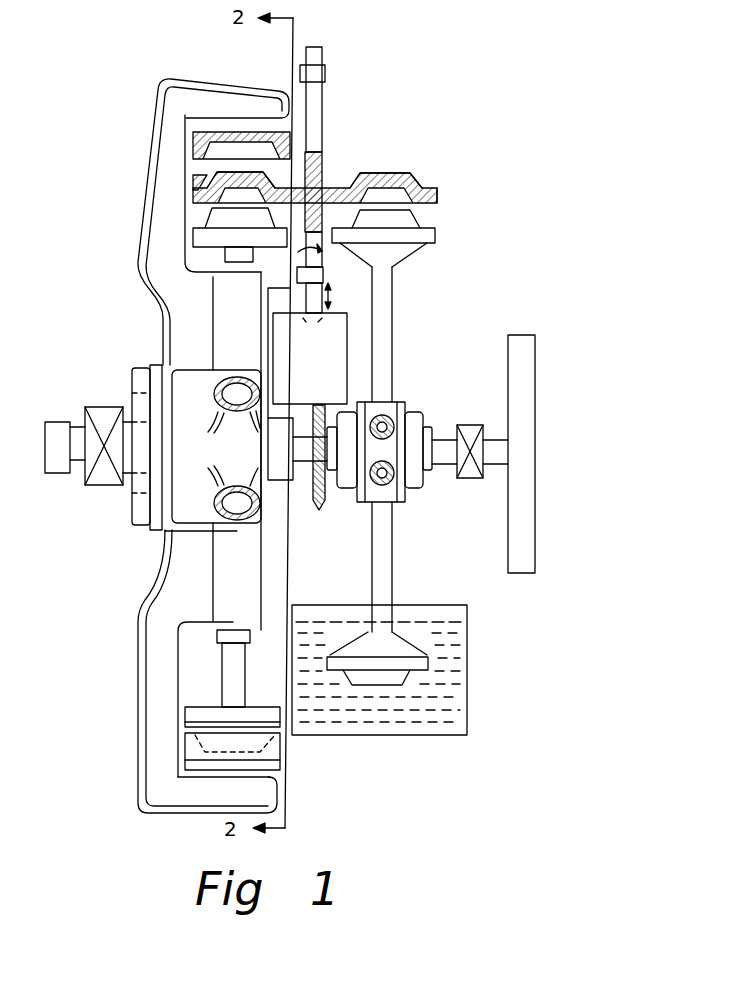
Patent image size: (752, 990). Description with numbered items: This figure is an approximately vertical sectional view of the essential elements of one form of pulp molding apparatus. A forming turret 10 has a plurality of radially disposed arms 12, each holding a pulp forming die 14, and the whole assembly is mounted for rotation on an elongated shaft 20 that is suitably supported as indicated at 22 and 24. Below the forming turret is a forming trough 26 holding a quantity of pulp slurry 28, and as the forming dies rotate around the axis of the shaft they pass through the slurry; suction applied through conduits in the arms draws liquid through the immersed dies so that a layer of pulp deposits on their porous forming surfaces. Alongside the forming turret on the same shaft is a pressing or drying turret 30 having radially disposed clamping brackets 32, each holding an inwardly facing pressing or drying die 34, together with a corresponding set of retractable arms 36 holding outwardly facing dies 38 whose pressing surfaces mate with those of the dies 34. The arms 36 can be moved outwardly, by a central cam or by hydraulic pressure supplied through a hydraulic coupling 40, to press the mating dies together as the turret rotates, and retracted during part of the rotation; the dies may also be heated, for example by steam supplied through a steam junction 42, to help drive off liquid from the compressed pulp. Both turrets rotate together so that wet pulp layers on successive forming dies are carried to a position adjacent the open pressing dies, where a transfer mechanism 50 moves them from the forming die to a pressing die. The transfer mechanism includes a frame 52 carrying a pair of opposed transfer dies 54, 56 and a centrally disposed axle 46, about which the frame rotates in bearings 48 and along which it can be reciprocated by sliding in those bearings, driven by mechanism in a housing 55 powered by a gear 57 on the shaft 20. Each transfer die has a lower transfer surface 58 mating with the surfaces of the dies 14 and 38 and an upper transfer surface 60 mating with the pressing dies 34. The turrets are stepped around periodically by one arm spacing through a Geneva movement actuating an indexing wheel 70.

The forming turret 10 is at (402, 506).
The radially disposed arm 12 is at (393, 578).
The pulp forming die 14 is at (413, 220).
The shaft 20 is at (440, 438).
The shaft support 22 is at (470, 425).
The shaft support 24 is at (100, 486).
The forming trough 26 is at (468, 708).
The pulp slurry 28 is at (440, 725).
The pressing or drying turret 30 is at (154, 543).
The clamping bracket 32 is at (157, 228).
The pressing or drying die 34 is at (284, 158).
The retractable arm 36 is at (246, 677).
The outwardly facing die 38 is at (289, 227).
The hydraulic coupling 40 is at (50, 475).
The steam junction 42 is at (283, 418).
The axle 46 is at (323, 117).
The bearing 48 is at (325, 70).
The transfer mechanism 50 is at (323, 182).
The frame 52 is at (342, 196).
The transfer die 54 is at (200, 195).
The housing 55 is at (348, 346).
The transfer die 56 is at (438, 195).
The gear 57 is at (330, 487).
The lower transfer surface 58 is at (210, 210).
The upper transfer surface 60 is at (390, 173).
The indexing wheel 70 is at (525, 573).